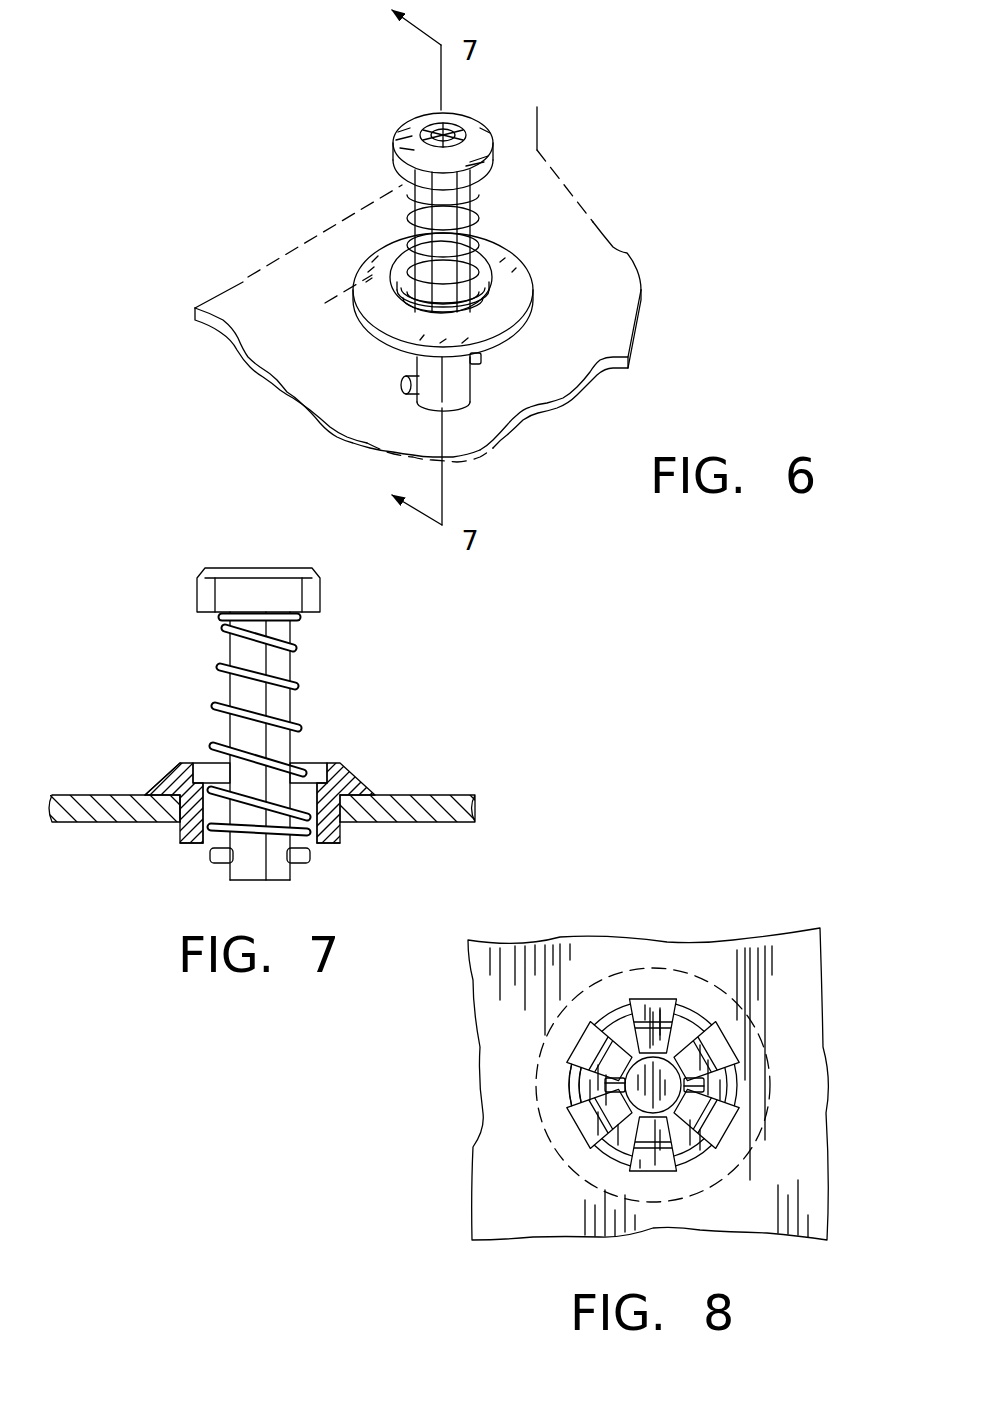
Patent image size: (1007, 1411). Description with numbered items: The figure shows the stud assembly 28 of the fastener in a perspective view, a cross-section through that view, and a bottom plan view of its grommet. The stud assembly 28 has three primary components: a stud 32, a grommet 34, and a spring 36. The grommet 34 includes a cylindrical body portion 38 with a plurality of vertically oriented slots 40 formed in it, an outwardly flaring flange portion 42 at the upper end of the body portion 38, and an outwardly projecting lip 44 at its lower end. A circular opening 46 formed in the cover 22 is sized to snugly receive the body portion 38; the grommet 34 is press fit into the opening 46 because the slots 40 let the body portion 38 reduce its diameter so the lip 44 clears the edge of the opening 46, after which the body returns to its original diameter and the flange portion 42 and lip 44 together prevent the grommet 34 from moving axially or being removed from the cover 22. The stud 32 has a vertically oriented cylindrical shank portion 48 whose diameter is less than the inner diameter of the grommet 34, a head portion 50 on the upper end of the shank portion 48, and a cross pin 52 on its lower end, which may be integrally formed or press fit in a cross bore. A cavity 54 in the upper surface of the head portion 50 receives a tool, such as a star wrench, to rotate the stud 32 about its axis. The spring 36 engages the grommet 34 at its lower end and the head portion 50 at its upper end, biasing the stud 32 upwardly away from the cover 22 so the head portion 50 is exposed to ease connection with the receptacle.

In FIG. 6, the cover 22 is at (665, 272).
In FIG. 7, the cover 22 is at (443, 800).
In FIG. 8, the cover 22 is at (747, 943).
In FIG. 6, the stud assembly 28 is at (372, 121).
In FIG. 7, the stud assembly 28 is at (258, 557).
In FIG. 8, the stud assembly 28 is at (575, 1139).
In FIG. 6, the stud 32 is at (460, 223).
In FIG. 7, the stud 32 is at (293, 667).
In FIG. 8, the stud 32 is at (657, 1107).
In FIG. 6, the grommet 34 is at (380, 320).
In FIG. 7, the grommet 34 is at (147, 787).
In FIG. 8, the grommet 34 is at (745, 1068).
In FIG. 6, the spring 36 is at (397, 185).
In FIG. 7, the spring 36 is at (217, 623).
In FIG. 6, the cylindrical body portion 38 is at (390, 272).
In FIG. 7, the cylindrical body portion 38 is at (343, 792).
In FIG. 8, the cylindrical body portion 38 is at (728, 1057).
In FIG. 8, the slots 40 is at (683, 1010).
In FIG. 6, the flange portion 42 is at (513, 303).
In FIG. 7, the flange portion 42 is at (345, 772).
In FIG. 8, the flange portion 42 is at (573, 1037).
In FIG. 7, the lip 44 is at (177, 835).
In FIG. 8, the lip 44 is at (573, 1087).
In FIG. 7, the circular opening 46 is at (180, 777).
In FIG. 6, the shank portion 48 is at (450, 260).
In FIG. 7, the shank portion 48 is at (240, 732).
In FIG. 8, the shank portion 48 is at (655, 1105).
In FIG. 6, the head portion 50 is at (473, 123).
In FIG. 7, the head portion 50 is at (210, 583).
In FIG. 6, the cross pin 52 is at (407, 383).
In FIG. 7, the cross pin 52 is at (310, 855).
In FIG. 8, the cross pin 52 is at (704, 1080).
In FIG. 6, the cavity 54 is at (452, 130).